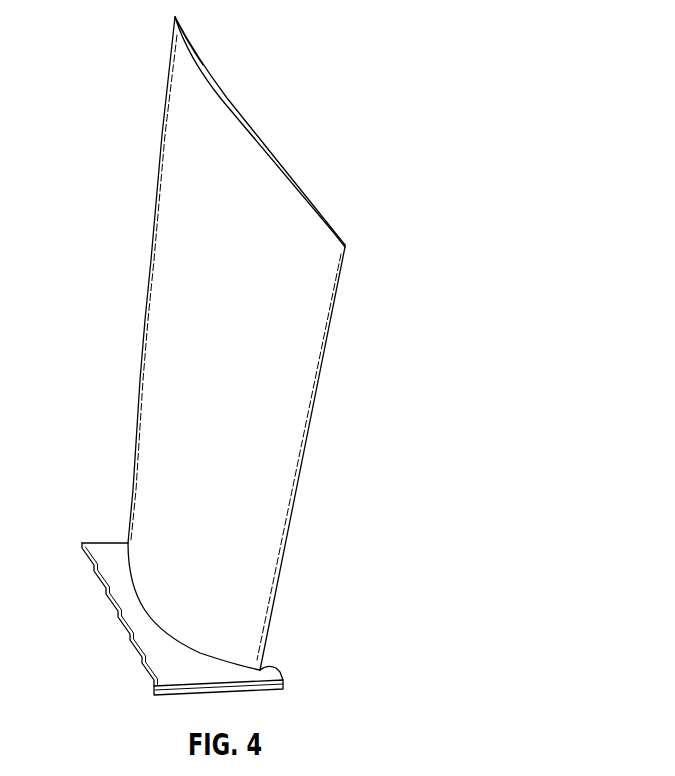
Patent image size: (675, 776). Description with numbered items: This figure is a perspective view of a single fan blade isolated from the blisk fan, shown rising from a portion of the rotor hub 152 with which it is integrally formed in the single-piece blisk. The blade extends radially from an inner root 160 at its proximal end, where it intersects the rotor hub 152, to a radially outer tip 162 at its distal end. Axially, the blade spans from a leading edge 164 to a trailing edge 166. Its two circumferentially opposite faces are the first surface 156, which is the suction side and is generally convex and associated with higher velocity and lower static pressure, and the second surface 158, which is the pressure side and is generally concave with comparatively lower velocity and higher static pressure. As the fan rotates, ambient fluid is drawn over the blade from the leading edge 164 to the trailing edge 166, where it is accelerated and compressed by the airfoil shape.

The rotor hub 152 is at (100, 555).
The first surface 156 is at (148, 443).
The second surface 158 is at (198, 60).
The inner root 160 is at (267, 667).
The radially outer tip 162 is at (257, 128).
The leading edge 164 is at (340, 366).
The trailing edge 166 is at (113, 273).